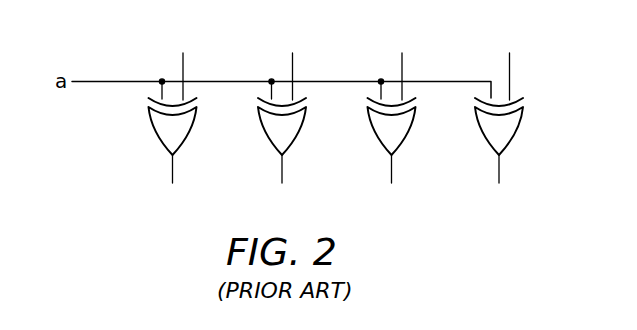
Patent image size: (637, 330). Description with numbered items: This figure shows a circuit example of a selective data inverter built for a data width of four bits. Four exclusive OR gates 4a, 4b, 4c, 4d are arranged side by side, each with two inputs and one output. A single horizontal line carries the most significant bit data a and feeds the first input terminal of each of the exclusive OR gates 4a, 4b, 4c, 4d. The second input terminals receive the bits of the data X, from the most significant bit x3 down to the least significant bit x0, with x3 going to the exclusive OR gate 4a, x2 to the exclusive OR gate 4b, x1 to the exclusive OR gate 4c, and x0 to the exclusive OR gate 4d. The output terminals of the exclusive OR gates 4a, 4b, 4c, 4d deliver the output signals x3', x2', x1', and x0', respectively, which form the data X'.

The exclusive OR gate 4a is at (158, 131).
The exclusive OR gate 4b is at (267, 131).
The exclusive OR gate 4c is at (377, 131).
The exclusive OR gate 4d is at (484, 131).